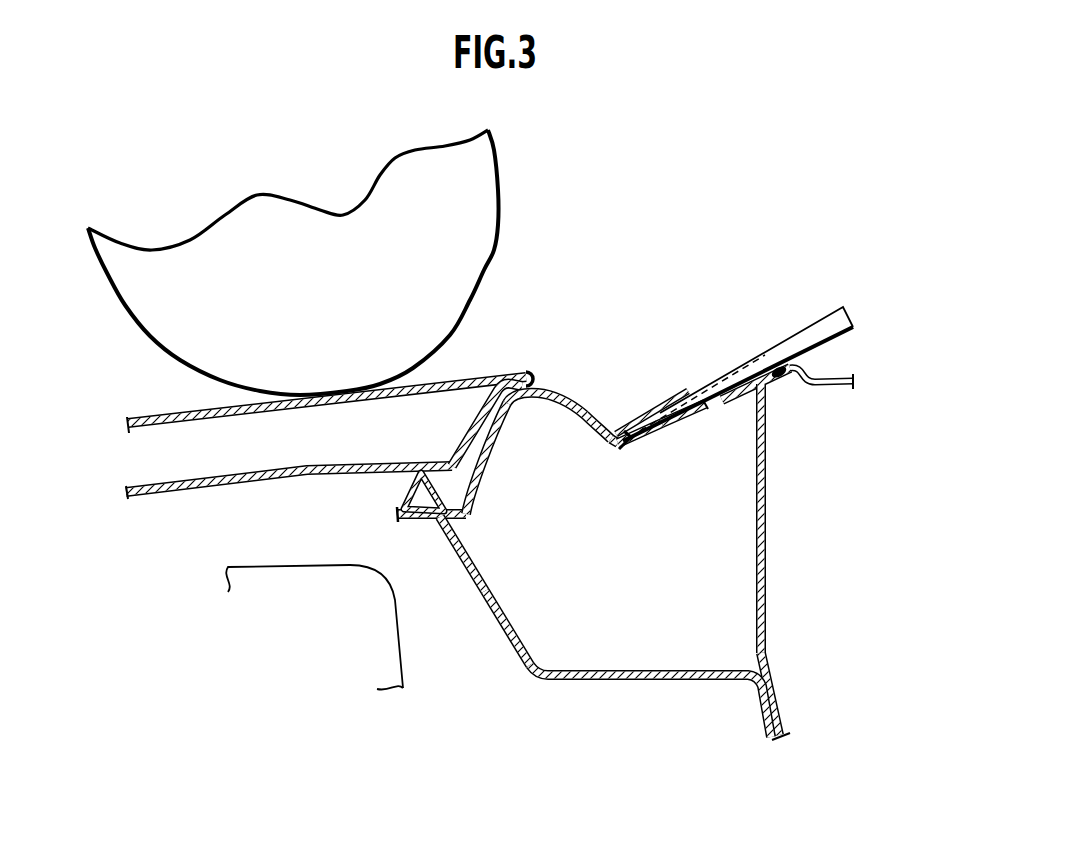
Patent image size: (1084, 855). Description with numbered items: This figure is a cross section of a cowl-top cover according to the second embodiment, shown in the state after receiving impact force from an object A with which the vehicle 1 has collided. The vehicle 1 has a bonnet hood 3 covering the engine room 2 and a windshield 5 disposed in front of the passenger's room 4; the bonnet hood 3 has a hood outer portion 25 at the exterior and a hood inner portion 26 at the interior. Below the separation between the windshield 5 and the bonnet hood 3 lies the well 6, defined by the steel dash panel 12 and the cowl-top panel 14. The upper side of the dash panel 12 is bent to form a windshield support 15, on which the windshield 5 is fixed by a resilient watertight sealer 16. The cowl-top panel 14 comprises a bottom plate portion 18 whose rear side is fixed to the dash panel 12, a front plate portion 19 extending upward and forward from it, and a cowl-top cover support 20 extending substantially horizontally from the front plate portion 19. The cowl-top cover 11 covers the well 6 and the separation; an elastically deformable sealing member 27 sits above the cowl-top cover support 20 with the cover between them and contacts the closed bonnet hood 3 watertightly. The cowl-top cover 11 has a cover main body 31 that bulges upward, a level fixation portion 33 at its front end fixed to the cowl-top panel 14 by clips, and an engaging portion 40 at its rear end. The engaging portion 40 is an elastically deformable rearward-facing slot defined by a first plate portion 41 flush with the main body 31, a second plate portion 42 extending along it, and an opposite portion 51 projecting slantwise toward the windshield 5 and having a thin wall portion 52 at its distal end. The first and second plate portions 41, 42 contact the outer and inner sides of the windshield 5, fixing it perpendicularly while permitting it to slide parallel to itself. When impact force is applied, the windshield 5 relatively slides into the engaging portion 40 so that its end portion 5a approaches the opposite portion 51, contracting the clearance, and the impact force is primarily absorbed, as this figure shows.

The vehicle 1 is at (603, 680).
The engine room 2 is at (160, 532).
The bonnet hood 3 is at (506, 372).
The passenger's room 4 is at (870, 345).
The windshield 5 is at (818, 318).
The end portion of the windshield 5a is at (617, 448).
The well 6 is at (746, 628).
The cowl-top cover 11 is at (548, 390).
The dash panel 12 is at (768, 522).
The cowl-top panel 14 is at (466, 578).
The windshield support 15 is at (786, 380).
The sealer 16 is at (772, 368).
The bottom plate portion 18 is at (682, 680).
The front plate portion 19 is at (483, 607).
The cowl-top cover support 20 is at (430, 524).
The hood outer portion 25 is at (165, 412).
The hood inner portion 26 is at (212, 490).
The sealing member 27 is at (405, 490).
The cover main body 31 is at (582, 397).
The fixation portion 33 is at (405, 520).
The engaging portion 40 is at (651, 405).
The first plate portion 41 is at (670, 395).
The second plate portion 42 is at (690, 430).
The opposite portion 51 is at (600, 441).
The thin wall portion 52 is at (612, 438).
The object A is at (497, 160).